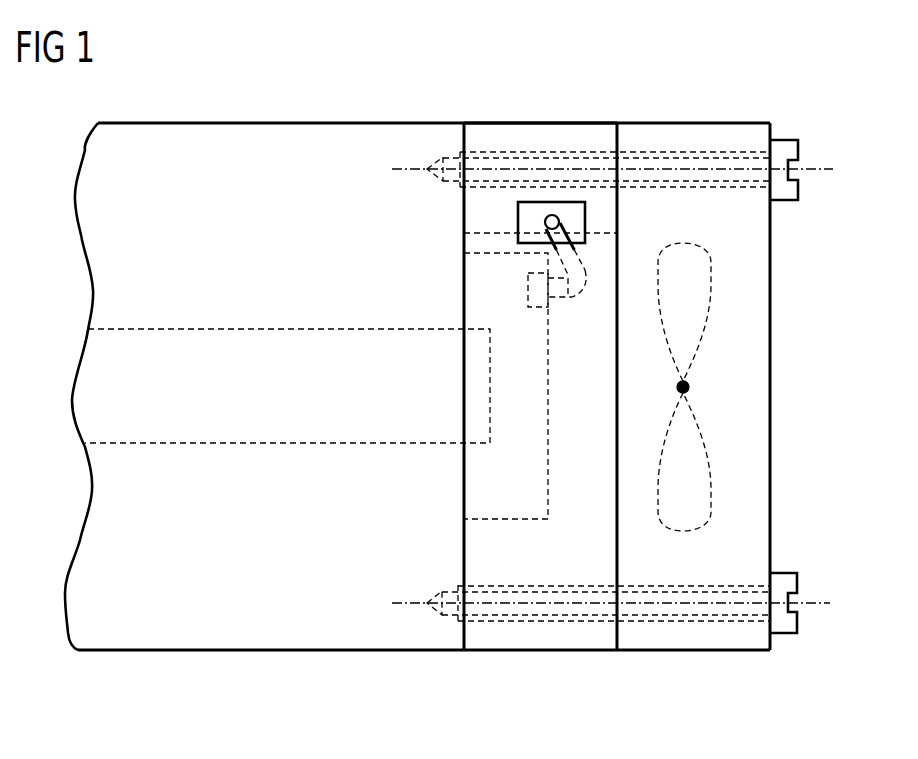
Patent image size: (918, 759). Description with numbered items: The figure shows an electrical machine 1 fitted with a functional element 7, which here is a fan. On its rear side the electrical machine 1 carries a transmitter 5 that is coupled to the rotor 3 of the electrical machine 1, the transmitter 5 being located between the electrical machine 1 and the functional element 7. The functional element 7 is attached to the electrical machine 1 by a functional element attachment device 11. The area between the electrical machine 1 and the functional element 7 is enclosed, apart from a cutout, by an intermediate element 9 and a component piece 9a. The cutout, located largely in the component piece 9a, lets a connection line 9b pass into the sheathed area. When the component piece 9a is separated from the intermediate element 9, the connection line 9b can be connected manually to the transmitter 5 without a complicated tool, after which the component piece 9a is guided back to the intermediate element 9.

The electrical machine 1 is at (236, 145).
The rotor 3 is at (235, 352).
The transmitter 5 is at (509, 498).
The functional element 7 is at (753, 388).
The intermediate element 9 is at (543, 640).
The component piece 9a is at (544, 140).
The connection line 9b is at (545, 222).
The functional element attachment device 11 is at (787, 188).